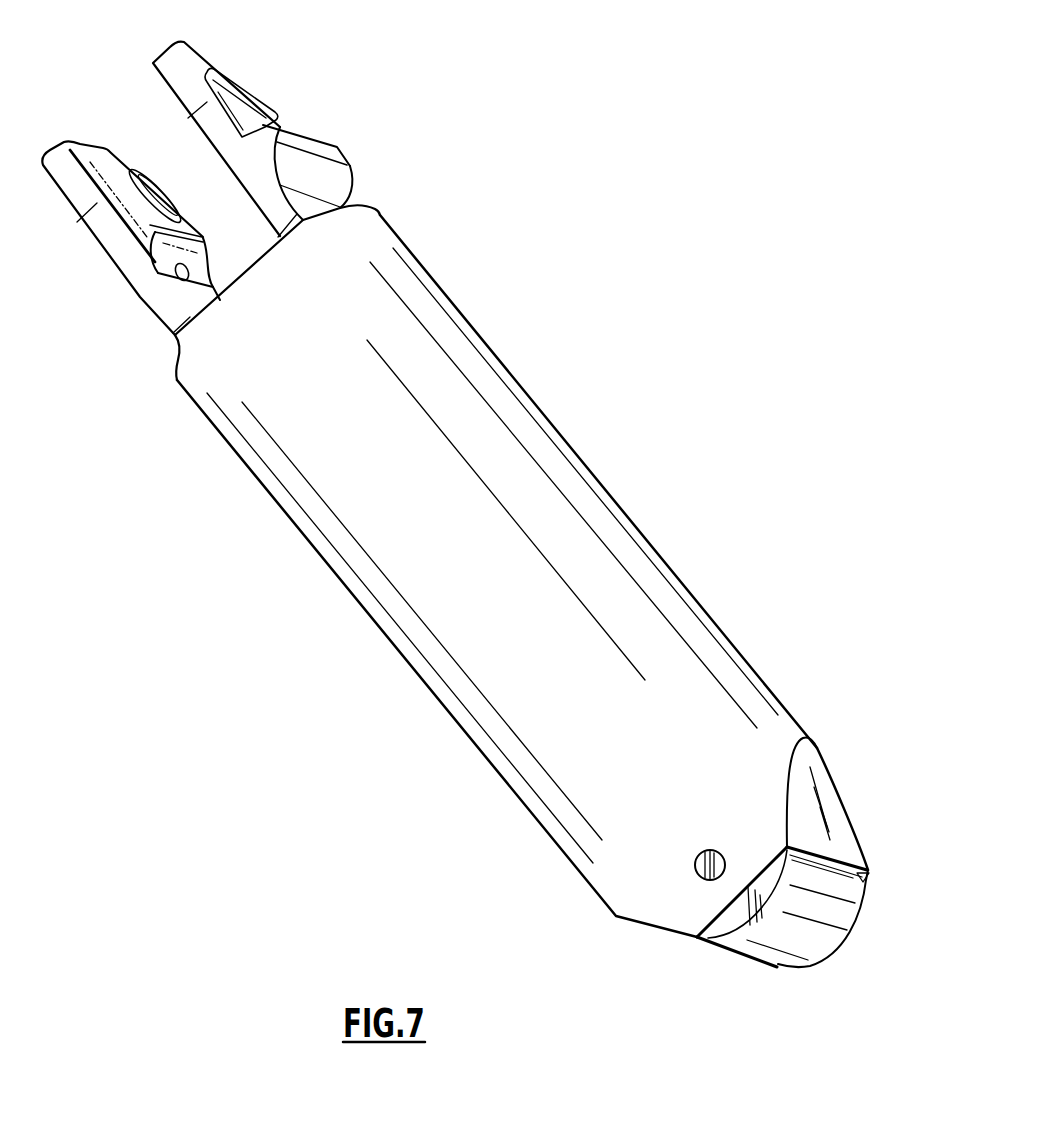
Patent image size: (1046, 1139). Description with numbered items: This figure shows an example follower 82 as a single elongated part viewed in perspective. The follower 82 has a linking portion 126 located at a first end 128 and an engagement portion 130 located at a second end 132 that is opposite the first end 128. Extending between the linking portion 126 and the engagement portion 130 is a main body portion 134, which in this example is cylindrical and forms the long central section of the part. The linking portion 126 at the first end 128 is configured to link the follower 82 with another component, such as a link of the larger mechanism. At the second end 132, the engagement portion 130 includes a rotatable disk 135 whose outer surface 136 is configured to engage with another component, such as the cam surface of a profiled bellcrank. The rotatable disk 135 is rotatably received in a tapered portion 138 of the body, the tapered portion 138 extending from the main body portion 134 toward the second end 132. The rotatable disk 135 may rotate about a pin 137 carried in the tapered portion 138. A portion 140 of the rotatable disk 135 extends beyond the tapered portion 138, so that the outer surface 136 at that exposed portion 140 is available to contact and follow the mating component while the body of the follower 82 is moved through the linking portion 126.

The follower 82 is at (228, 745).
The linking portion 126 is at (258, 183).
The first end 128 is at (421, 85).
The engagement portion 130 is at (873, 805).
The second end 132 is at (655, 1003).
The main body portion 134 is at (570, 540).
The rotatable disk 135 is at (742, 917).
The outer surface 136 is at (802, 923).
The pin 137 is at (695, 859).
The tapered portion 138 is at (827, 797).
The portion of the rotatable disk 140 is at (848, 887).